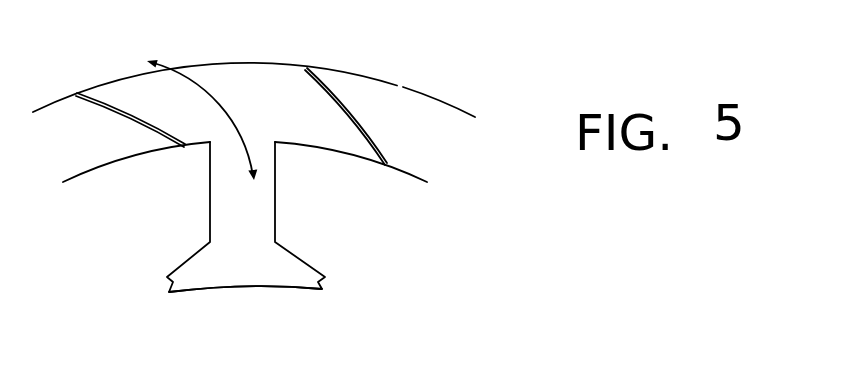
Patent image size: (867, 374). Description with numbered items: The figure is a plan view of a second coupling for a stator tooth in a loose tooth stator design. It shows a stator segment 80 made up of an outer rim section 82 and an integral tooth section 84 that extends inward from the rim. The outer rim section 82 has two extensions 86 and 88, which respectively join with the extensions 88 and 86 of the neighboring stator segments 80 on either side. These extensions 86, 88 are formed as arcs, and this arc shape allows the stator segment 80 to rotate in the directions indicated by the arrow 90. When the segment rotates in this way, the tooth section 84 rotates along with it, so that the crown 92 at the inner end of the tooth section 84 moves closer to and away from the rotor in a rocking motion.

The stator segment 80 is at (40, 99).
The outer rim section 82 is at (217, 73).
The tooth section 84 is at (232, 190).
The extension 86 is at (112, 90).
The extension 88 is at (163, 140).
The arrow 90 is at (253, 157).
The crown 92 is at (300, 282).